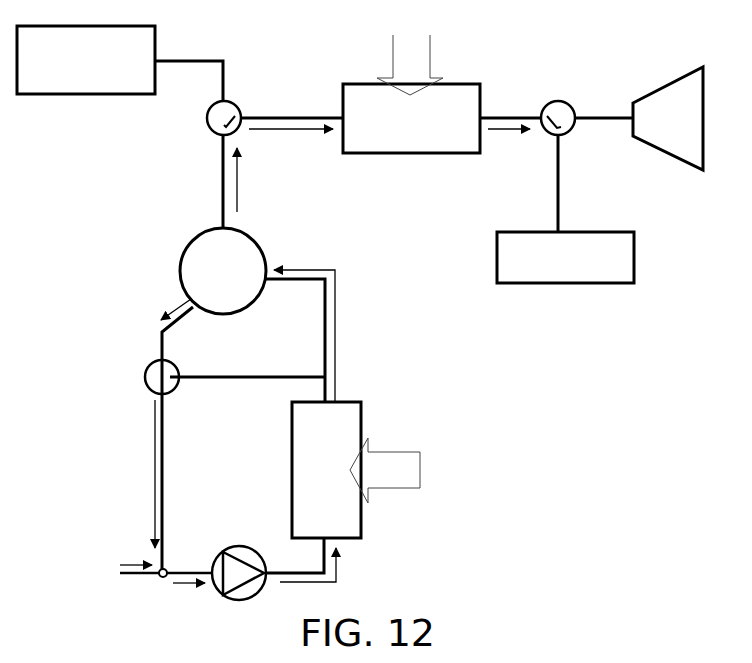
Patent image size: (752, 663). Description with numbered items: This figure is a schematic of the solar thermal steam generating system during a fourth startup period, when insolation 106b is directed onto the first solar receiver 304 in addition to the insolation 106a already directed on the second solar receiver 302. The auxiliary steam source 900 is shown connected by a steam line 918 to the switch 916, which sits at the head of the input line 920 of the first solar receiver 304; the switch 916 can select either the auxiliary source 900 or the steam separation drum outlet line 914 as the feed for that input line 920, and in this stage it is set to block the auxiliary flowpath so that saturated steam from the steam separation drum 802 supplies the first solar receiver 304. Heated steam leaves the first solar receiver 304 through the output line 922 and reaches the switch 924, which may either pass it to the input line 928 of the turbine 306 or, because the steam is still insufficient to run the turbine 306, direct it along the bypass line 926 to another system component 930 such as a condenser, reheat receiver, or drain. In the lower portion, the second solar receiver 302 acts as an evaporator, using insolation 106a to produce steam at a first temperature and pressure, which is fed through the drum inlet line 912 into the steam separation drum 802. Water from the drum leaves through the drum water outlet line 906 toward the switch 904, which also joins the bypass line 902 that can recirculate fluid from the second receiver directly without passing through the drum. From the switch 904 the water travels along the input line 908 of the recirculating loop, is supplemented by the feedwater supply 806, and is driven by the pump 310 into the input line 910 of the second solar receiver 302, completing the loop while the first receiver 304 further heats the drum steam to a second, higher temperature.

The auxiliary steam source 900 is at (86, 60).
The steam line 918 is at (214, 55).
The switch 916 is at (191, 141).
The input line 920 is at (298, 164).
The first solar receiver 304 is at (411, 118).
The solar insolation 106b is at (375, 62).
The output line 922 is at (504, 79).
The switch 924 is at (545, 73).
The input line 928 is at (602, 74).
The turbine 306 is at (668, 118).
The bypass line 926 is at (511, 183).
The system component 930 is at (565, 257).
The steam separation drum outlet line 914 is at (197, 182).
The steam separation drum 802 is at (223, 271).
The drum inlet line 912 is at (329, 336).
The drum water outlet line 906 is at (144, 323).
The switch 904 is at (122, 355).
The bypass line 902 is at (247, 350).
The second solar receiver 302 is at (326, 470).
The solar insolation 106a is at (409, 455).
The input line 908 is at (188, 483).
The feedwater supply 806 is at (143, 597).
The pump 310 is at (242, 530).
The input line 910 is at (292, 589).